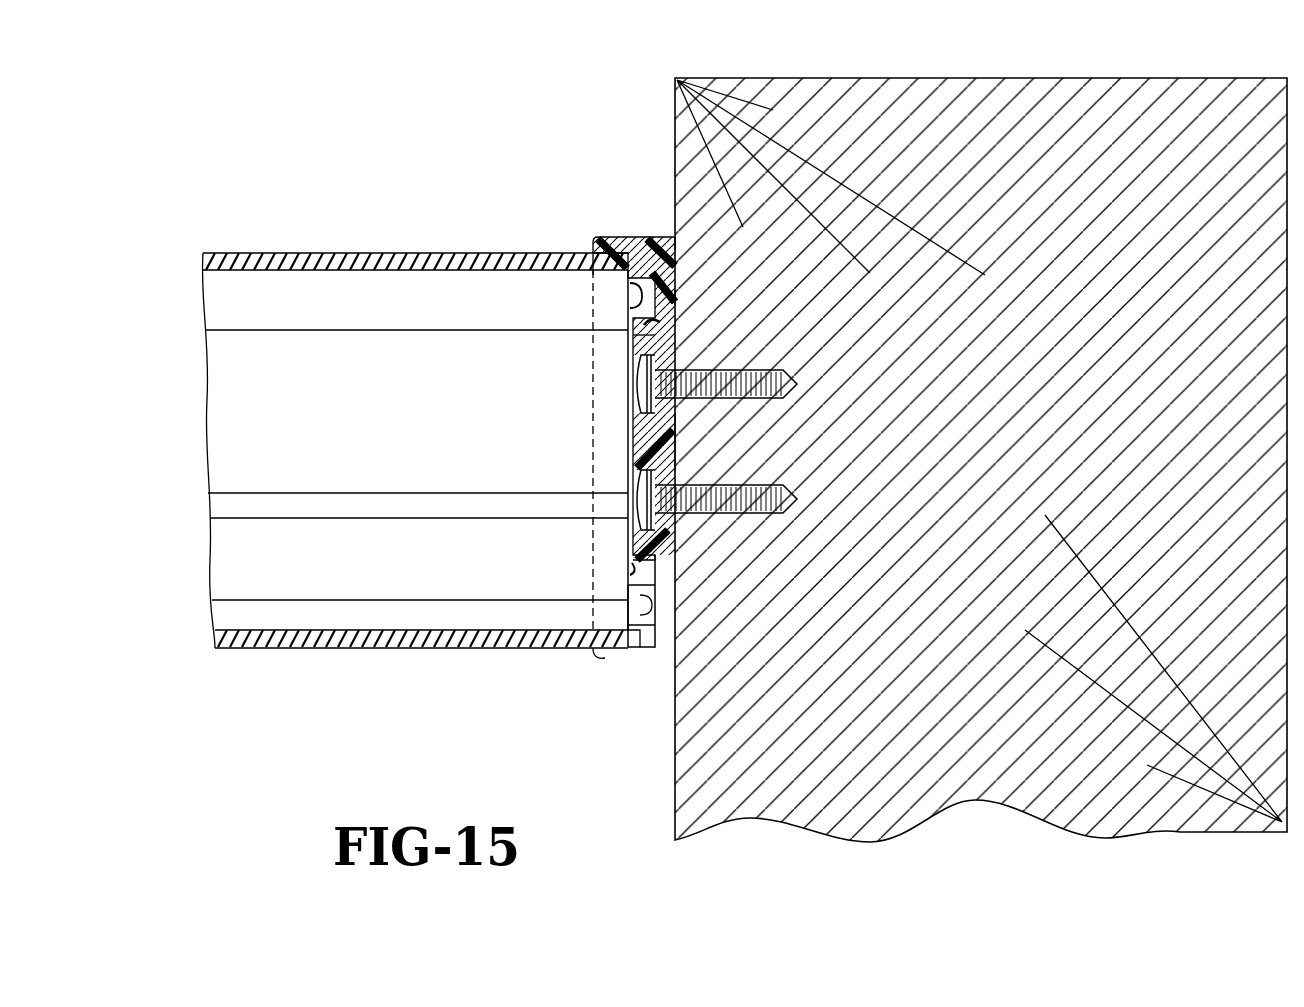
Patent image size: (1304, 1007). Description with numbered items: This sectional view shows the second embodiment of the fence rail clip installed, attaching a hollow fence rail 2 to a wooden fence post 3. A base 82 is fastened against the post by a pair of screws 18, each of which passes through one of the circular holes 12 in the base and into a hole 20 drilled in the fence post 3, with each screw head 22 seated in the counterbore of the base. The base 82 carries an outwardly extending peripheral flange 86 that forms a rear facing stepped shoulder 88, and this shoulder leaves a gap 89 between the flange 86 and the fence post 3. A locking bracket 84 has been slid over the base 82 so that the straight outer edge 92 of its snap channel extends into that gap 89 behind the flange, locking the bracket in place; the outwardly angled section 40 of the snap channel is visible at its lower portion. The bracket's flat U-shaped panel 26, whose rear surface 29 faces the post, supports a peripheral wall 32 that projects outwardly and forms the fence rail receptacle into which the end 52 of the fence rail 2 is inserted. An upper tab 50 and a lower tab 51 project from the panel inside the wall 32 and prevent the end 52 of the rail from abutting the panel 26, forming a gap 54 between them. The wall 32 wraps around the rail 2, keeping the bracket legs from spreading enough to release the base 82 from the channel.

The fence rail 2 is at (305, 253).
The fence post 3 is at (1045, 78).
The circular holes 12 is at (673, 372).
The screws 18 is at (744, 393).
The holes 20 is at (708, 392).
The screw head 22 is at (632, 383).
The panel 26 is at (680, 265).
The rear surface 29 is at (676, 300).
The peripheral wall 32 is at (598, 652).
The outwardly angled section 40 is at (668, 635).
The upper tab 50 is at (641, 265).
The lower tab 51 is at (638, 648).
The end of rail 52 is at (628, 290).
The gap 54 is at (652, 600).
The base 82 is at (633, 457).
The locking bracket 84 is at (598, 237).
The peripheral flange 86 is at (630, 570).
The stepped shoulder 88 is at (662, 322).
The gap 89 is at (665, 558).
The straight outer edge 92 is at (632, 342).